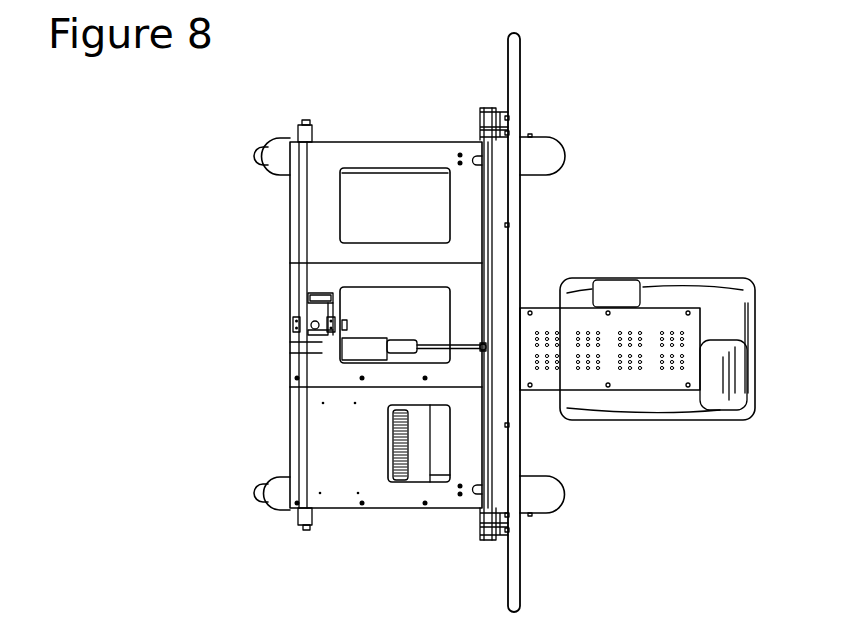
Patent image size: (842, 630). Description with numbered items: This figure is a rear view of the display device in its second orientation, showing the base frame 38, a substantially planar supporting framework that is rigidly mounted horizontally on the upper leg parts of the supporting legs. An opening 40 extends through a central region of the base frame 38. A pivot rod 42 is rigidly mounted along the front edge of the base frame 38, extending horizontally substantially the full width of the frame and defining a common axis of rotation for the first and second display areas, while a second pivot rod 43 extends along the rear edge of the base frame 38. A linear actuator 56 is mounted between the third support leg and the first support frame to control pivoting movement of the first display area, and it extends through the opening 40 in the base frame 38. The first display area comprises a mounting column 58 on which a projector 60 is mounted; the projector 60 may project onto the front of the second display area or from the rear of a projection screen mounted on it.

The base frame 38 is at (355, 160).
The opening 40 is at (409, 318).
The pivot rod 42 is at (480, 178).
The second pivot rod 43 is at (307, 217).
The linear actuator 56 is at (362, 348).
The mounting column 58 is at (650, 332).
The projector 60 is at (720, 285).